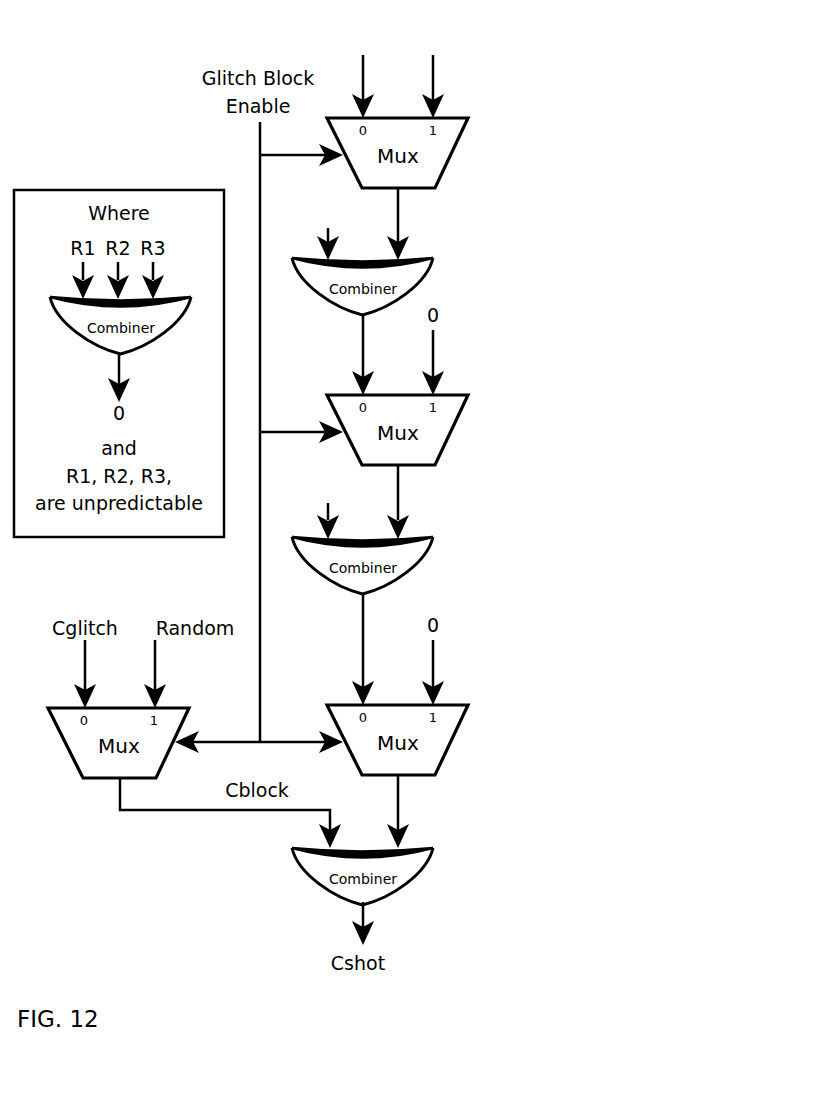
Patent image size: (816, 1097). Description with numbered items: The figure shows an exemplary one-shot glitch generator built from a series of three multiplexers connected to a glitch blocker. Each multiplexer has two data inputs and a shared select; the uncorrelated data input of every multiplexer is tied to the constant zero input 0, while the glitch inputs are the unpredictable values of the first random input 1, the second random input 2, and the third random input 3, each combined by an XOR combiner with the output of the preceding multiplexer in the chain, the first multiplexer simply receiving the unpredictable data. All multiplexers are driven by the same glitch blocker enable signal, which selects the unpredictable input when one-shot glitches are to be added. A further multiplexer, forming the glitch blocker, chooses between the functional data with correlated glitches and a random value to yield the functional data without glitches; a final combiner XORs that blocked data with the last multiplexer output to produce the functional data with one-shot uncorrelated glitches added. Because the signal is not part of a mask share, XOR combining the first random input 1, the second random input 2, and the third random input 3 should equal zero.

The R1 random input 1 is at (362, 73).
The R2 random input 2 is at (327, 231).
The R3 random input 3 is at (327, 508).
The constant zero input 0 is at (433, 73).